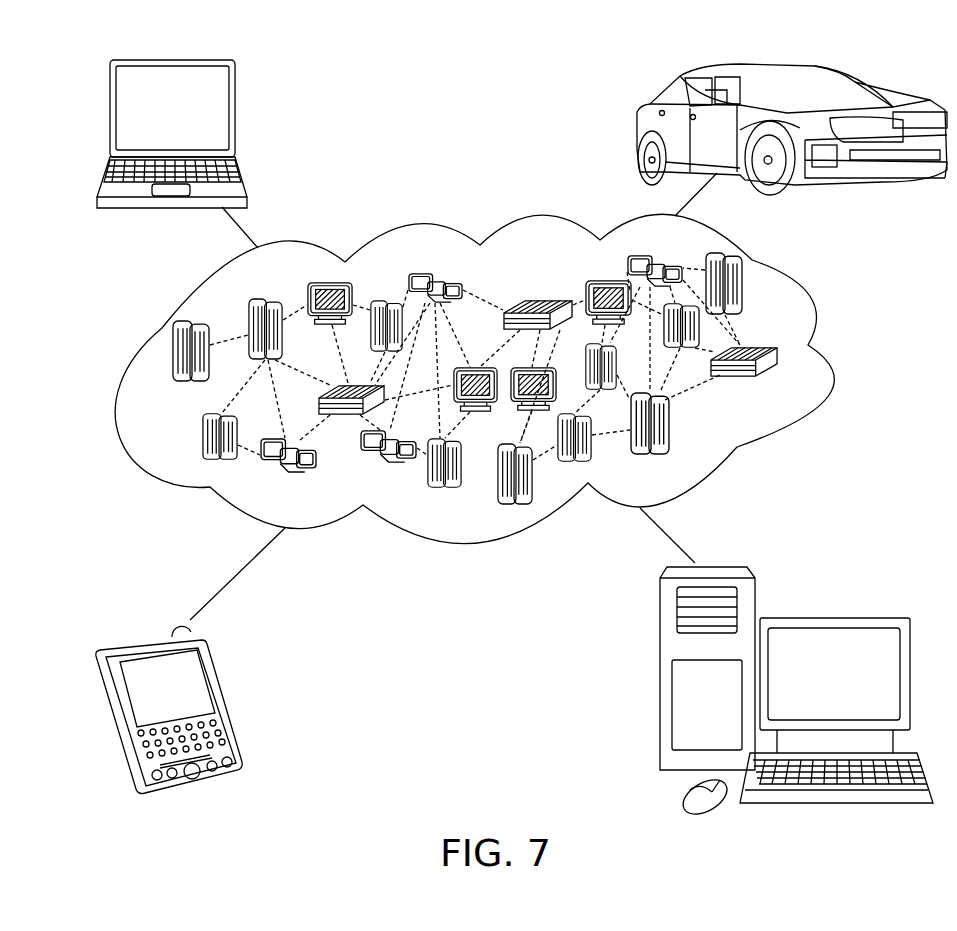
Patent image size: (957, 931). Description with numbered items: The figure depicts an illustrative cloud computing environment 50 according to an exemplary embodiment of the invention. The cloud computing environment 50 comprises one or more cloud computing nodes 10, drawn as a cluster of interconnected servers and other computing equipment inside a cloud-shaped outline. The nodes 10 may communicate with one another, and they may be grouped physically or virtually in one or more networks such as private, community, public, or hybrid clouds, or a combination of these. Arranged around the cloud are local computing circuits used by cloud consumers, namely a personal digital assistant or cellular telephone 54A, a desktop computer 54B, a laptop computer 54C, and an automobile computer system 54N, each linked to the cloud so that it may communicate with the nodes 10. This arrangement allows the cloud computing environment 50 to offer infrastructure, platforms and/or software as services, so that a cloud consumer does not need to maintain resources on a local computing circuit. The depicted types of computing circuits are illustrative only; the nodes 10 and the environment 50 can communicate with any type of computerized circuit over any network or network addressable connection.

The cloud computing nodes 10 is at (782, 386).
The cloud computing environment 50 is at (834, 358).
The personal digital assistant or cellular telephone 54A is at (224, 700).
The desktop computer 54B is at (832, 616).
The laptop computer 54C is at (237, 116).
The automobile computer system 54N is at (637, 132).